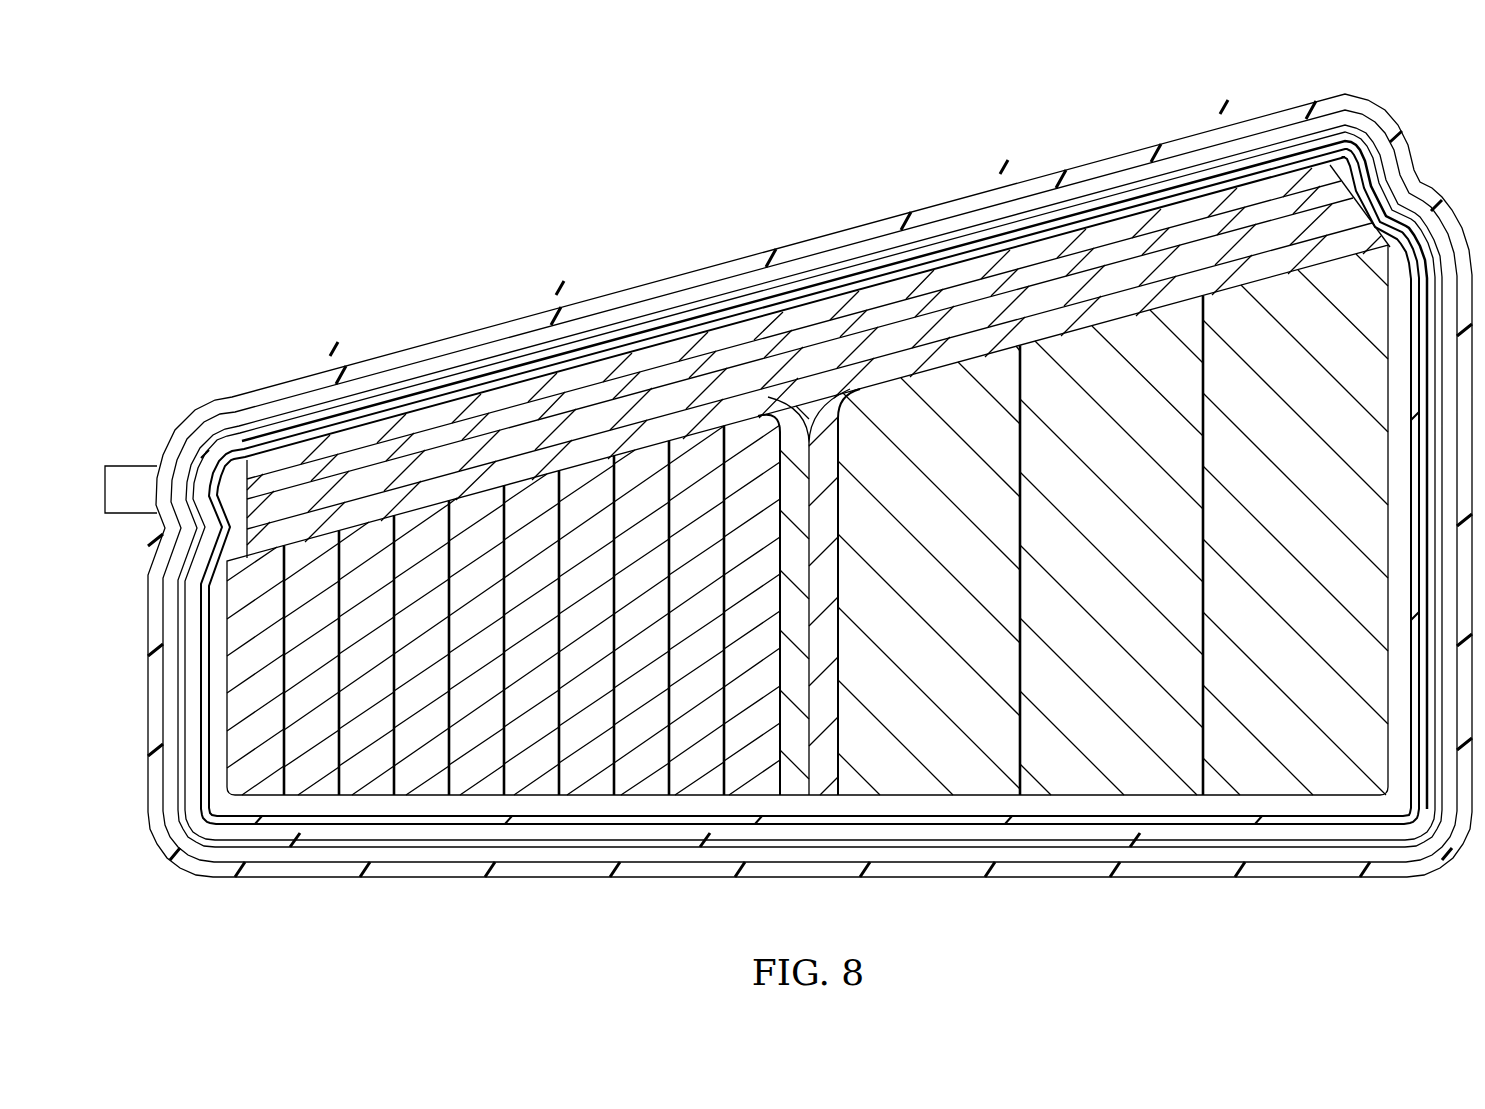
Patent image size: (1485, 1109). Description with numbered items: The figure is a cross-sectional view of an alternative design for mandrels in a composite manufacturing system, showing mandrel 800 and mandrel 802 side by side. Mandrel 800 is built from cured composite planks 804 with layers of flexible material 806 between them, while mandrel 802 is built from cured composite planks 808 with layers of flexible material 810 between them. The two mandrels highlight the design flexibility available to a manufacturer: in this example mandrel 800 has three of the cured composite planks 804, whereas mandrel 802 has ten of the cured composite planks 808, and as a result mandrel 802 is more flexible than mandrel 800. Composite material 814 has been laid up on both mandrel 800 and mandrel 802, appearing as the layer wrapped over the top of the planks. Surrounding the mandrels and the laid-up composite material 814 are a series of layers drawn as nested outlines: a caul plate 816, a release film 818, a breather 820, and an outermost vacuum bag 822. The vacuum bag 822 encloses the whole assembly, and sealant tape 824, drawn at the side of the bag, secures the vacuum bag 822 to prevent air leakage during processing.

The mandrel 800 is at (1378, 796).
The mandrel 802 is at (231, 796).
The cured composite planks 804 is at (1143, 796).
The layers of flexible material 806 is at (1020, 796).
The cured composite planks 808 is at (640, 796).
The layers of flexible material 810 is at (558, 796).
The composite material 814 is at (1243, 233).
The caul plate 816 is at (976, 292).
The release film 818 is at (1022, 240).
The breather 820 is at (1104, 180).
The vacuum bag 822 is at (470, 335).
The sealant tape 824 is at (132, 466).